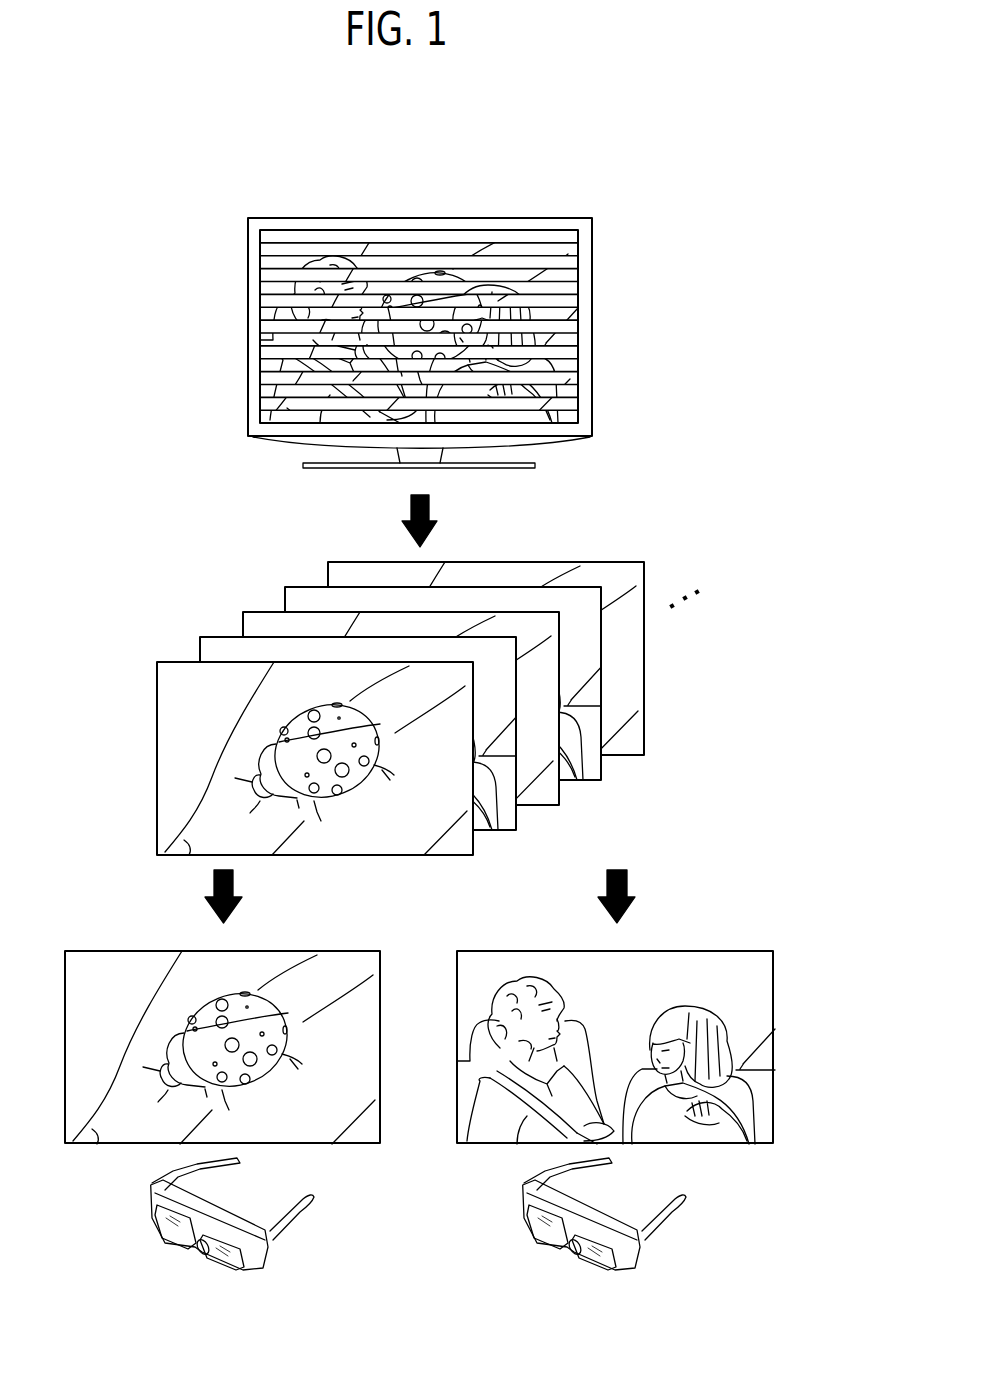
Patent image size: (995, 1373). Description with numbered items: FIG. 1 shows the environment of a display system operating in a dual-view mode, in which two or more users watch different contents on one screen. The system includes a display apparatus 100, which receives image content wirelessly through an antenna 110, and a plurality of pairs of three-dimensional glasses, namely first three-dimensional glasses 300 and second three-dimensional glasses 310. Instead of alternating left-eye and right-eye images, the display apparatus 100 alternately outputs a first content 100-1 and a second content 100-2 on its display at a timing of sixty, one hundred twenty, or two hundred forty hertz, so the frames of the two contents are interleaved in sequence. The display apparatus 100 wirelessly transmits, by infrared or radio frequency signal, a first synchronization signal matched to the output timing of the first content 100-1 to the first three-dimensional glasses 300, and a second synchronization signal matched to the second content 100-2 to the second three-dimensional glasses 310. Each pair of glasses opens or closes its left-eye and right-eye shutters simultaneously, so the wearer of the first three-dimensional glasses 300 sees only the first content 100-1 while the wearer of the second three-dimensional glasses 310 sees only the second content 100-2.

The display apparatus 100 is at (459, 302).
The antenna 110 is at (592, 327).
The first content 100-1 is at (327, 562).
The second content 100-2 is at (285, 587).
The first 3D glasses 300 is at (267, 1263).
The second 3D glasses 310 is at (639, 1263).